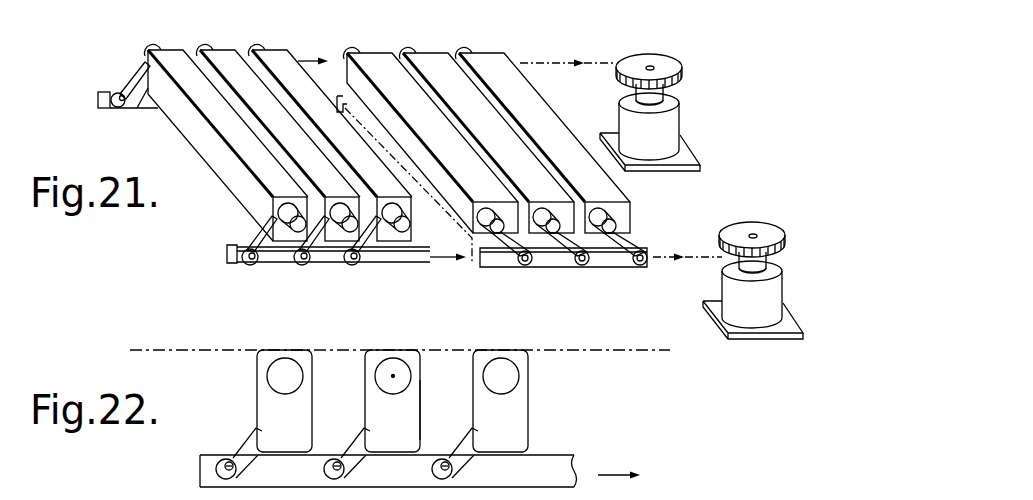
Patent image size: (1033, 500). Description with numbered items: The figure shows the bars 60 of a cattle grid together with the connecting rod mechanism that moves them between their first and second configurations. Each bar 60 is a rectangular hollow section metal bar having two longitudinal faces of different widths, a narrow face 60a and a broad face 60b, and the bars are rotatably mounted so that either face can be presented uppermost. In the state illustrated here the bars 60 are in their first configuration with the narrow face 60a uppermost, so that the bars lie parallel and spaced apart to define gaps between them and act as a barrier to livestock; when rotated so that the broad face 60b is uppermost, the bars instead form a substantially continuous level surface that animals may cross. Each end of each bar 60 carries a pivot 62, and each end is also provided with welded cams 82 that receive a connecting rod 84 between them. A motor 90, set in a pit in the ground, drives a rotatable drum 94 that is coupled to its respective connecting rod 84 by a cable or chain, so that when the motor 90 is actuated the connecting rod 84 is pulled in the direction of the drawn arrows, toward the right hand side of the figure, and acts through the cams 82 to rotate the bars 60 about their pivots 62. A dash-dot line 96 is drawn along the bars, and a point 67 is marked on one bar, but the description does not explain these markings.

In FIG. 21, the bar 60 is at (203, 143).
In FIG. 22, the bar 60 is at (268, 410).
In FIG. 22, the narrow longitudinal face 60a is at (369, 349).
In FIG. 22, the broad longitudinal face 60b is at (423, 392).
In FIG. 22, the pivot 62 is at (276, 376).
In FIG. 22, the pivot point 67 is at (393, 375).
In FIG. 22, the cam 82 is at (243, 443).
In FIG. 21, the connecting rod 84 is at (228, 256).
In FIG. 22, the connecting rod 84 is at (212, 472).
In FIG. 21, the motor 90 is at (680, 120).
In FIG. 21, the rotatable drum 94 is at (683, 63).
In FIG. 22, the center line 96 is at (612, 352).